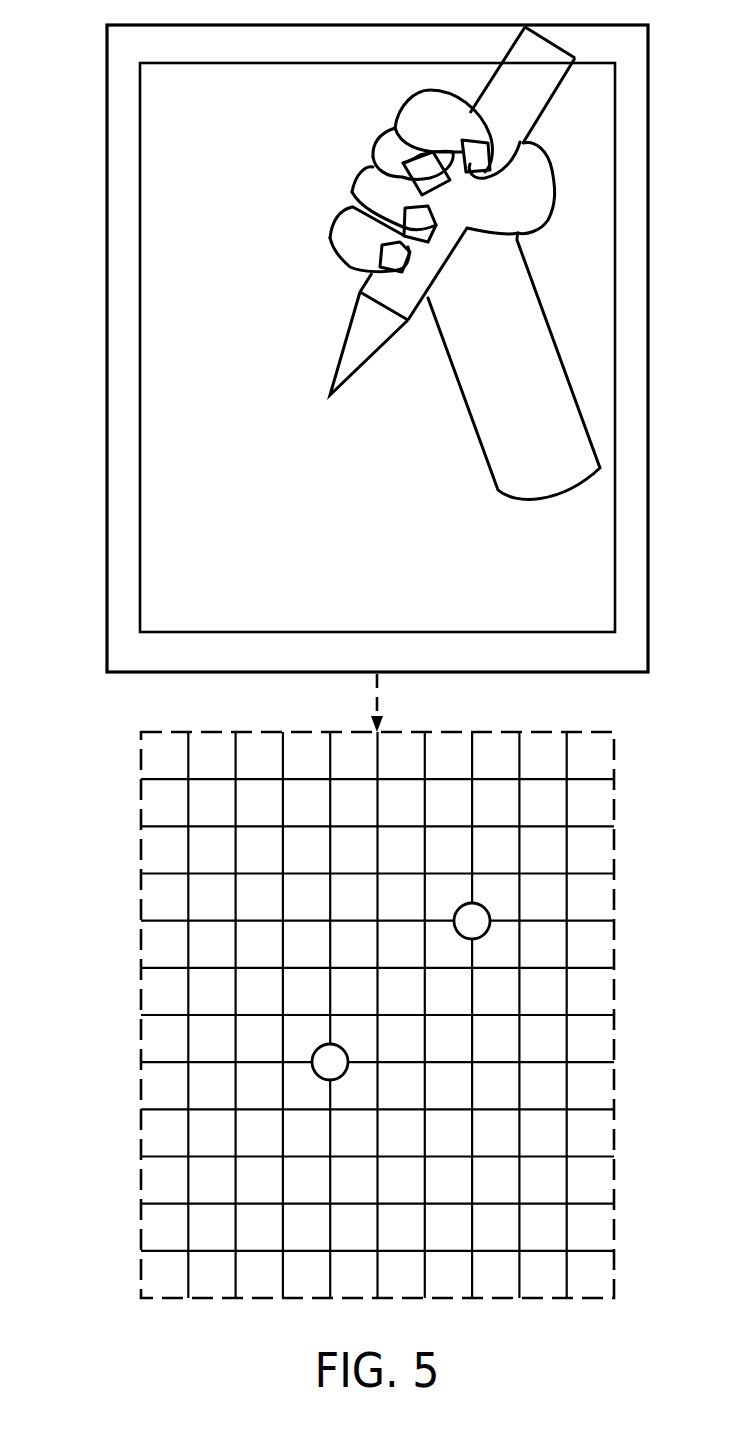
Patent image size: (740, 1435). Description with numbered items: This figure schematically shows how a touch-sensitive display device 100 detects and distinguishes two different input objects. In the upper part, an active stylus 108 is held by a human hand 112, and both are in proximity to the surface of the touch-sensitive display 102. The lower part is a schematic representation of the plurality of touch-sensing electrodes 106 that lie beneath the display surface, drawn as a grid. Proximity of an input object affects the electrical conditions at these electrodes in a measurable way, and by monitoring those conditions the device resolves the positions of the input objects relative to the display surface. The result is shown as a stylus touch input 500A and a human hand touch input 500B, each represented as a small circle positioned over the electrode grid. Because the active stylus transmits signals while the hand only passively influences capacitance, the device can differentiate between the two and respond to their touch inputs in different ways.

The touch-sensitive display device 100 is at (107, 53).
The touch-sensitive display 102 is at (174, 63).
The active stylus 108 is at (337, 367).
The human hand 112 is at (350, 199).
The touch-sensing electrodes 106 is at (94, 771).
The stylus touch input 500A is at (317, 1051).
The human hand touch input 500B is at (459, 910).